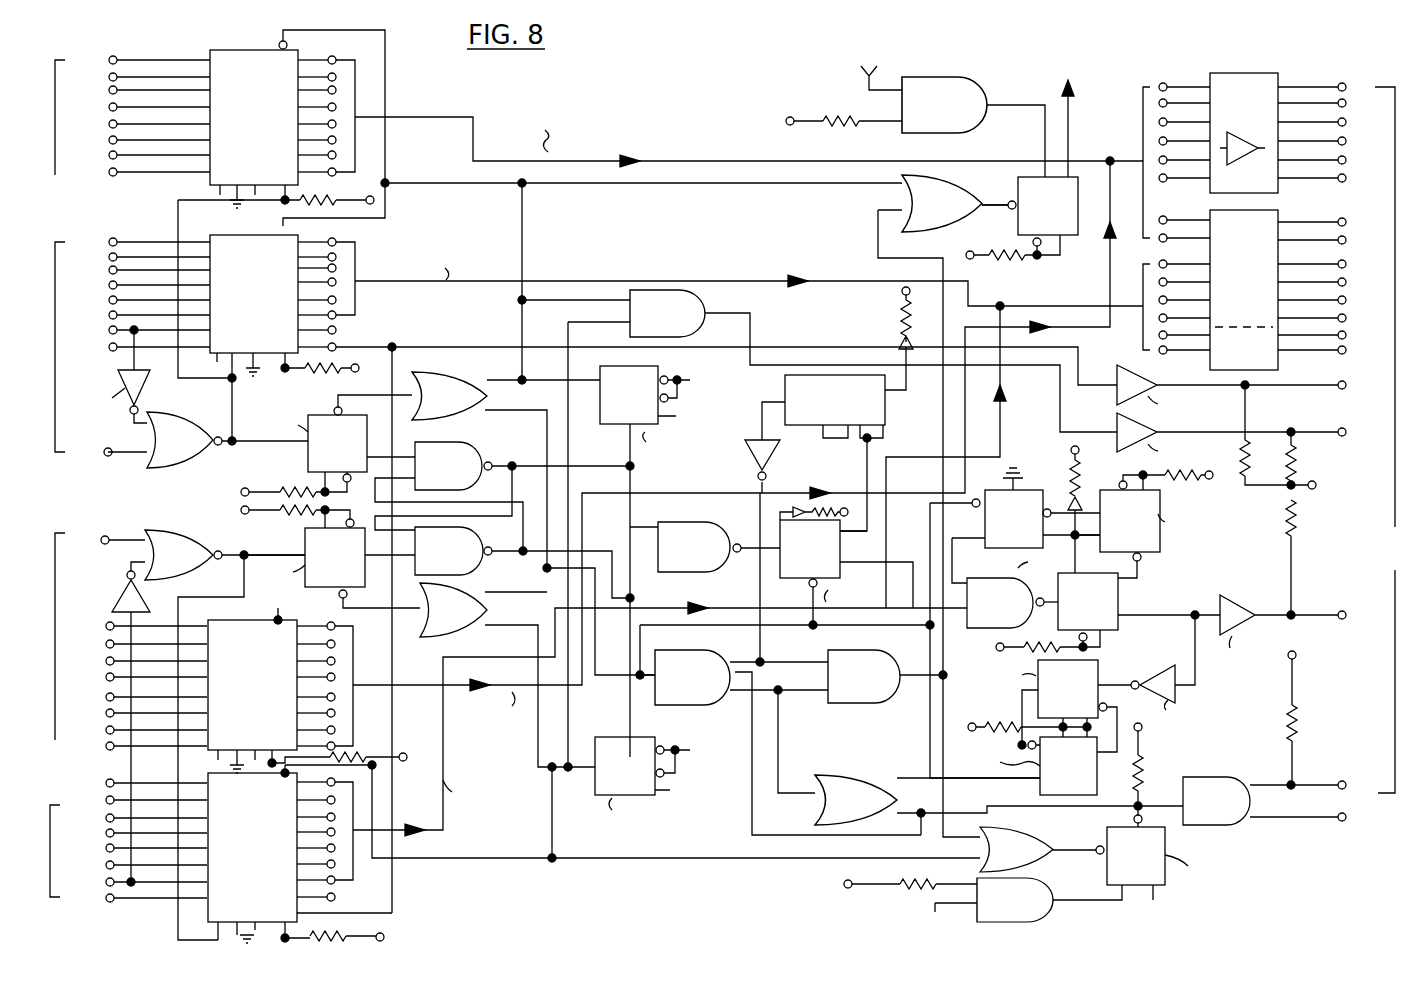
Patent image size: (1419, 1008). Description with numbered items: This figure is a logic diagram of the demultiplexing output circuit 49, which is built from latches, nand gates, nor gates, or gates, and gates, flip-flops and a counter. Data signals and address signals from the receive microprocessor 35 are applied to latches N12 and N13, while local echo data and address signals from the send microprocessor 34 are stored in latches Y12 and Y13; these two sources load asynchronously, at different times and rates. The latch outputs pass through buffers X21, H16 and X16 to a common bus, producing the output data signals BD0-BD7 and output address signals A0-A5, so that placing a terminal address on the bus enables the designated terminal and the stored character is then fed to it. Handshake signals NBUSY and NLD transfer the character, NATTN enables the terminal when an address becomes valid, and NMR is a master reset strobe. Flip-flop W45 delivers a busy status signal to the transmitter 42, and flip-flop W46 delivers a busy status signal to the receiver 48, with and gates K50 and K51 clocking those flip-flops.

The receive microprocessor 35 is at (124, 251).
The send microprocessor 34 is at (121, 720).
The demultiplexing output circuit 49 is at (731, 486).
The receiver 48 is at (870, 45).
The transmitter 42 is at (1125, 935).